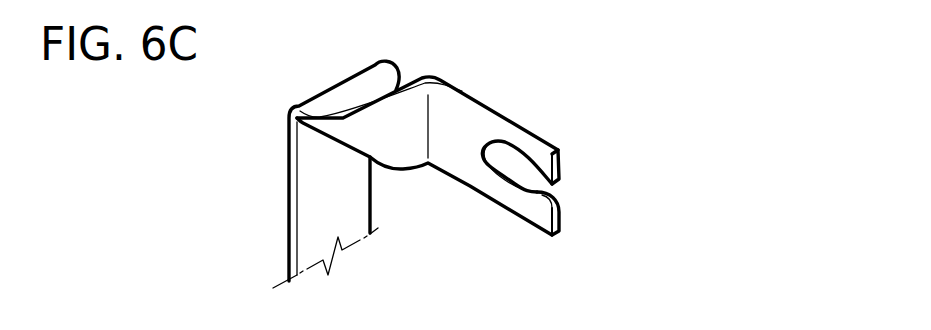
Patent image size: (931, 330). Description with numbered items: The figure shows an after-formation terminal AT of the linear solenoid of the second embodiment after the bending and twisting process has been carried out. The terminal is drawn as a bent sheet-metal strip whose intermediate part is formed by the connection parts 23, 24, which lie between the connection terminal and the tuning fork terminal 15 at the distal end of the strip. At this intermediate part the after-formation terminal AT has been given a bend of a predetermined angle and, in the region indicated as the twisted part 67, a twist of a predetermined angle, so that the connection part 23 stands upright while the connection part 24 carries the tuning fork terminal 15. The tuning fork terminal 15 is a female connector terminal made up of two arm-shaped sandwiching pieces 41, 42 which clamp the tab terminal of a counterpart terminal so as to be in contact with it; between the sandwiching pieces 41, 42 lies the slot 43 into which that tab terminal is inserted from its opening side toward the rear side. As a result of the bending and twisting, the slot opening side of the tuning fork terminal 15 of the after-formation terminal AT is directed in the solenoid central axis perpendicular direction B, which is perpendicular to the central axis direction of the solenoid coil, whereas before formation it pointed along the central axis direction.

The connection part 23 is at (313, 213).
The connection part 24 is at (456, 88).
The twisted part 67 is at (387, 147).
The tuning fork terminal 15 is at (700, 96).
The sandwiching piece 41 is at (545, 211).
The sandwiching piece 42 is at (542, 163).
The slot 43 is at (533, 186).
The after-formation terminal AT is at (515, 83).
The solenoid central axis perpendicular direction B is at (621, 236).